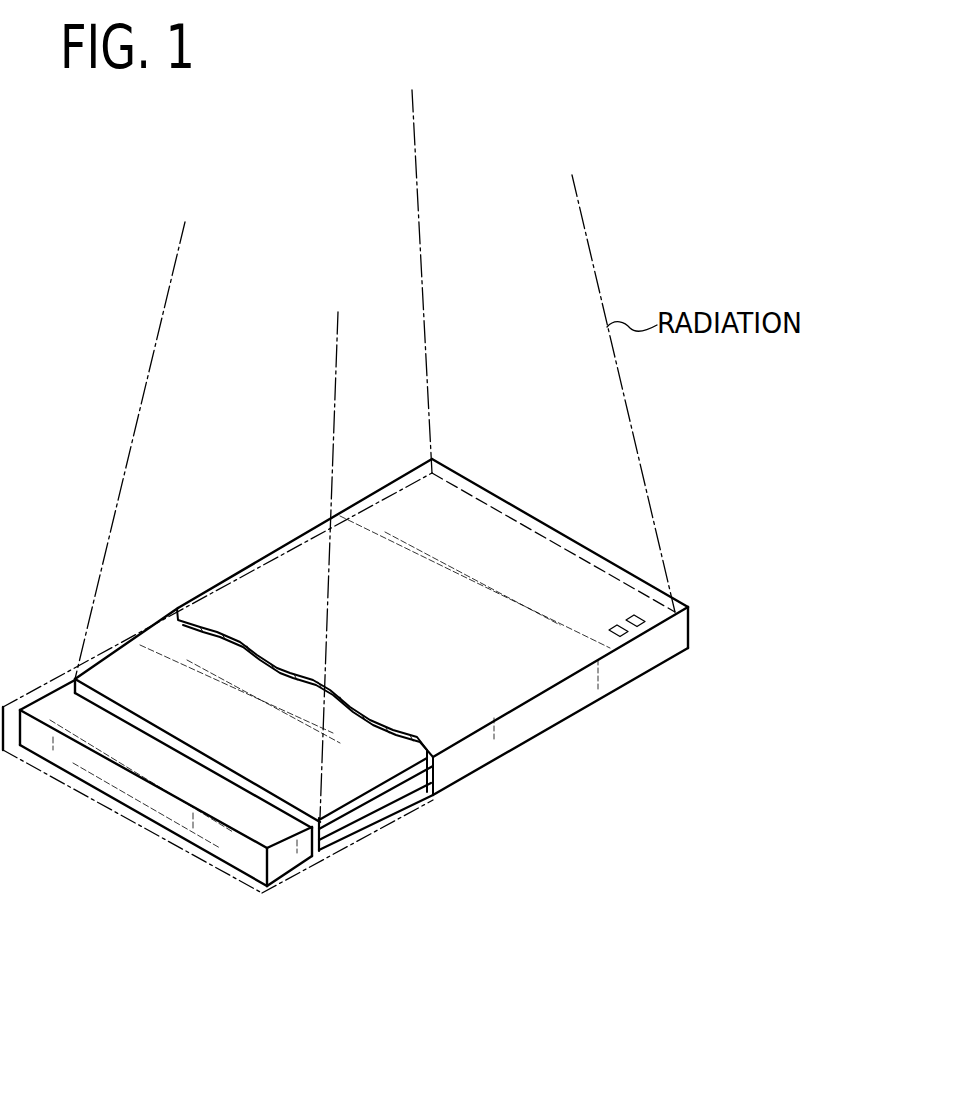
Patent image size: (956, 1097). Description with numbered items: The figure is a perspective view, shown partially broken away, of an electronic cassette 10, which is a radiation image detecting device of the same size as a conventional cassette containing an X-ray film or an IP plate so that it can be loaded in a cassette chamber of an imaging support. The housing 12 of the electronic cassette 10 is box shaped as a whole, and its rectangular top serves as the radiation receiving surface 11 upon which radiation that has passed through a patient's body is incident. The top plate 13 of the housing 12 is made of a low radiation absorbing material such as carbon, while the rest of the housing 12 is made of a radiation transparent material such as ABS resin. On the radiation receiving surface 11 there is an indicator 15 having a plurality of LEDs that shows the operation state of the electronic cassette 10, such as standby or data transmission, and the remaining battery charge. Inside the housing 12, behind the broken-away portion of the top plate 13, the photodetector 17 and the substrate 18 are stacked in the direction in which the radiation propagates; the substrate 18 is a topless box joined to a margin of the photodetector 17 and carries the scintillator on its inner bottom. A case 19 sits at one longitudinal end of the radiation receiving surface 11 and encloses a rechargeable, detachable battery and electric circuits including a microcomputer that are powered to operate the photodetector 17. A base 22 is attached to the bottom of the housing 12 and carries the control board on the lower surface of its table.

The electronic cassette 10 is at (598, 536).
The radiation receiving surface 11 is at (492, 552).
The housing 12 is at (567, 710).
The top plate 13 is at (238, 637).
The indicator 15 is at (653, 613).
The photodetector 17 is at (371, 778).
The substrate 18 is at (380, 813).
The case 19 is at (127, 788).
The base 22 is at (342, 838).